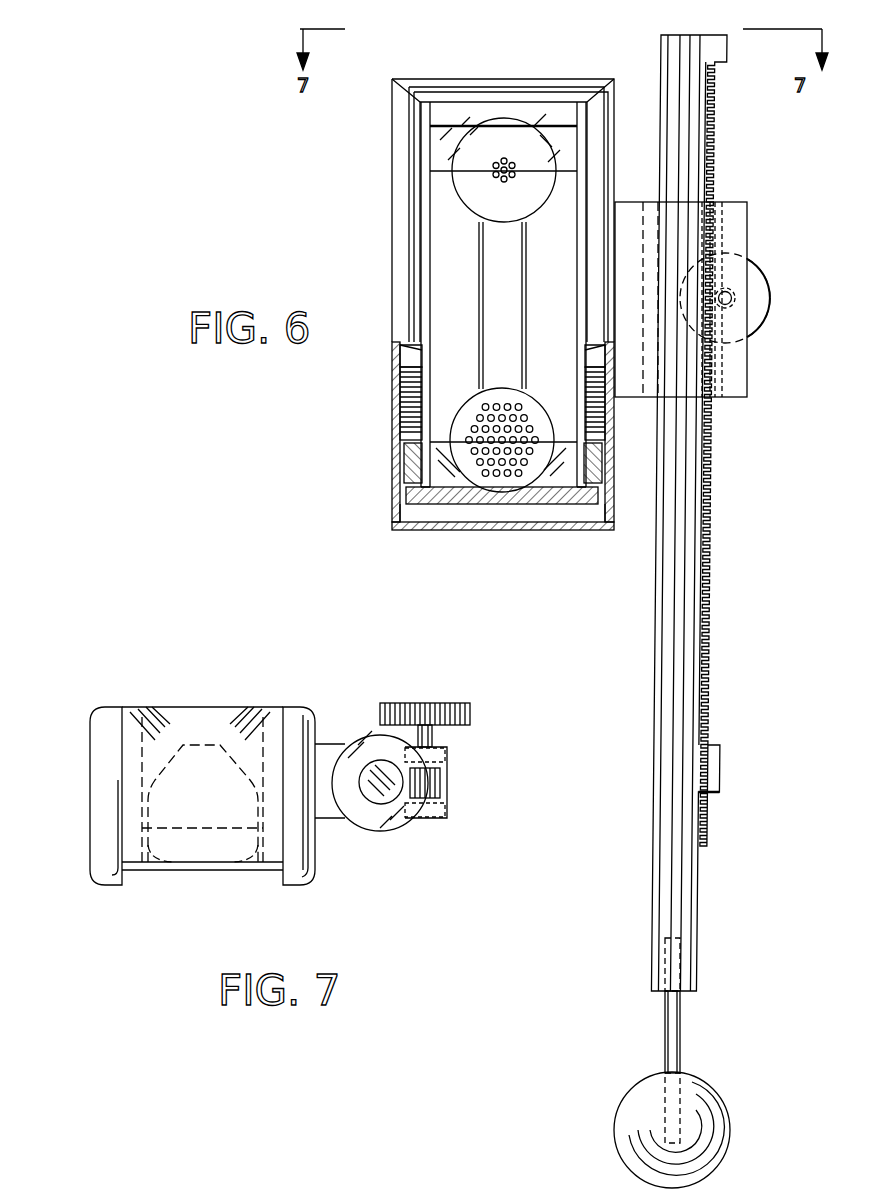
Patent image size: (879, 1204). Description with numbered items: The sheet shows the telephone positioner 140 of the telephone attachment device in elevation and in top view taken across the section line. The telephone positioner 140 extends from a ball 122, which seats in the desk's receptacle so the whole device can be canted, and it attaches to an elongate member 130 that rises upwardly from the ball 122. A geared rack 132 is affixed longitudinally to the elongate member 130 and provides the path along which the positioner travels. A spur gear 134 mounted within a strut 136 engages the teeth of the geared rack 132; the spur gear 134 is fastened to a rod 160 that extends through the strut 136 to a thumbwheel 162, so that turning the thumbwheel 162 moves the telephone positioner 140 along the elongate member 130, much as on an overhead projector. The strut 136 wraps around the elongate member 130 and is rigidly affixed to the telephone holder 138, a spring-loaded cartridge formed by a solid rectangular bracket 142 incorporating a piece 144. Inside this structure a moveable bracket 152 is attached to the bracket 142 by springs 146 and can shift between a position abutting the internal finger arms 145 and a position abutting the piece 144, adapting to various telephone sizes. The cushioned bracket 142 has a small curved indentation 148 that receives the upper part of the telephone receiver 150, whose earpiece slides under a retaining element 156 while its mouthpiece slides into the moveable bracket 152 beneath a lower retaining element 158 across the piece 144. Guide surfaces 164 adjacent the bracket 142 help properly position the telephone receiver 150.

In FIG. 6, the ball 122 is at (713, 1100).
In FIG. 6, the elongate member 130 is at (698, 951).
In FIG. 7, the elongate member 130 is at (380, 770).
In FIG. 6, the geared rack 132 is at (712, 658).
In FIG. 7, the geared rack 132 is at (400, 795).
In FIG. 6, the spur gear 134 is at (735, 290).
In FIG. 7, the spur gear 134 is at (440, 785).
In FIG. 6, the strut 136 is at (733, 202).
In FIG. 7, the strut 136 is at (445, 820).
In FIG. 6, the telephone holder 138 is at (570, 80).
In FIG. 7, the telephone holder 138 is at (290, 708).
In FIG. 6, the telephone positioner 140 is at (440, 64).
In FIG. 7, the telephone positioner 140 is at (100, 692).
In FIG. 6, the bracket 142 is at (398, 287).
In FIG. 7, the bracket 142 is at (100, 813).
In FIG. 6, the piece 144 is at (495, 531).
In FIG. 6, the internal finger arms 145 is at (420, 480).
In FIG. 6, the springs 146 is at (410, 420).
In FIG. 6, the curved indentation 148 is at (500, 118).
In FIG. 6, the telephone receiver 150 is at (492, 262).
In FIG. 7, the telephone receiver 150 is at (200, 850).
In FIG. 6, the moveable bracket 152 is at (462, 497).
In FIG. 6, the retaining element 156 is at (452, 172).
In FIG. 7, the retaining element 156 is at (255, 870).
In FIG. 6, the lower retaining element 158 is at (428, 460).
In FIG. 7, the rod 160 is at (432, 735).
In FIG. 6, the thumbwheel 162 is at (752, 333).
In FIG. 7, the thumbwheel 162 is at (445, 705).
In FIG. 7, the guide surfaces 164 is at (150, 720).